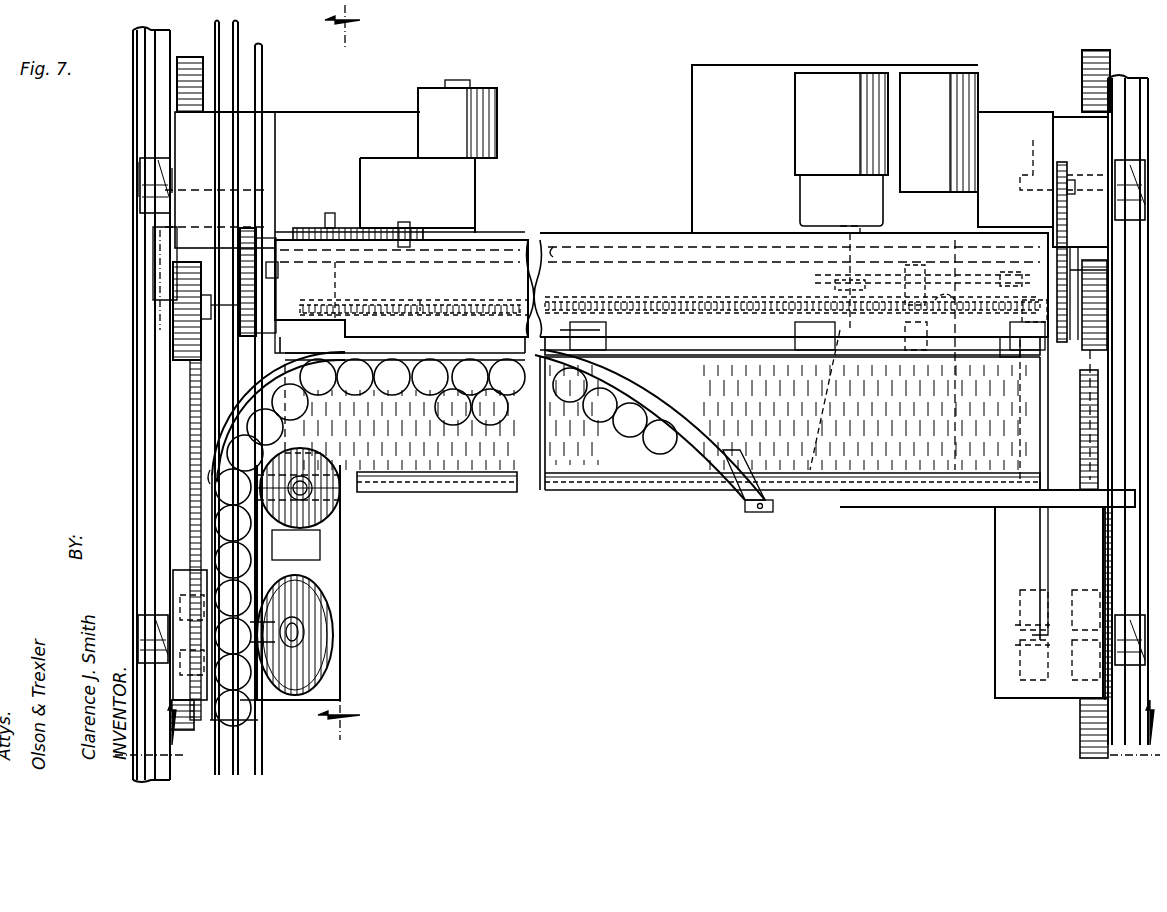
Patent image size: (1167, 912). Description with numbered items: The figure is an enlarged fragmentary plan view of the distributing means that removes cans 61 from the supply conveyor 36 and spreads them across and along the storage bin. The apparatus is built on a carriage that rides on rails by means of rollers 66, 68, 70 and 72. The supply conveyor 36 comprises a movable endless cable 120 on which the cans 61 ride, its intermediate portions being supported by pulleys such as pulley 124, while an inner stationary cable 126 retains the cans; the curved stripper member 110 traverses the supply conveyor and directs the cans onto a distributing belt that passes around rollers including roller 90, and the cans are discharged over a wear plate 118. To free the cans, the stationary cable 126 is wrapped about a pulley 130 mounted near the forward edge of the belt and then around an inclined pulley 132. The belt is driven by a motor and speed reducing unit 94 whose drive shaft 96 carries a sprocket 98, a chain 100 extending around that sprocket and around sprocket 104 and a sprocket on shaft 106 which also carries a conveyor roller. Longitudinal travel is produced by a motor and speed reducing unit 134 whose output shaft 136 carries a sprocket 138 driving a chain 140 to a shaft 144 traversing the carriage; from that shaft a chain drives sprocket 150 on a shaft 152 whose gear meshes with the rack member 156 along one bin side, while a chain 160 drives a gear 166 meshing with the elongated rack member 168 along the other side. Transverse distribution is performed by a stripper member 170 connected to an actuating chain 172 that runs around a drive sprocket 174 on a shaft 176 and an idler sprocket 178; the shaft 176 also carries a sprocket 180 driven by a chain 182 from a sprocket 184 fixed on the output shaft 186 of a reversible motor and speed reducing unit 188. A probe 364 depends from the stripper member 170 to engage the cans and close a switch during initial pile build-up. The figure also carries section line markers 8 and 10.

The elongated rack member 168 is at (180, 92).
The roller 68 is at (140, 200).
The gear 166 is at (185, 298).
The curved stripper member 110 is at (225, 430).
The roller 66 is at (150, 560).
The chain 160 is at (257, 238).
The sprocket 180 is at (350, 228).
The chain 182 is at (372, 228).
The output shaft 186 is at (408, 228).
The sprocket 184 is at (425, 228).
The reversible motor and speed reducing unit 188 is at (497, 122).
The actuating chain 172 is at (483, 300).
The rotatably supported shaft 176 is at (340, 282).
The drive sprocket 174 is at (420, 305).
The shaft 144 is at (595, 248).
The motor and speed reducing unit 94 is at (800, 105).
The drive shaft 96 is at (848, 240).
The sprocket 98 is at (830, 282).
The sprocket 104 is at (935, 300).
The motor and speed reducing unit 134 is at (1030, 112).
The output shaft 136 is at (1015, 169).
The sprocket 138 is at (1080, 182).
The drive chain 140 is at (1067, 185).
The roller 72 is at (1115, 198).
The idler sprocket 178 is at (930, 303).
The chain 100 is at (852, 340).
The shaft 106 is at (1010, 345).
The sprocket 150 is at (1060, 345).
The stripper member 170 is at (727, 447).
The roller 90 is at (310, 432).
The cans 61 is at (440, 390).
The pulley 130 is at (315, 505).
The wear plate 118 is at (588, 482).
The probe 364 is at (758, 512).
The rack member 156 is at (1080, 490).
The roller 70 is at (1118, 610).
The shaft 152 is at (1010, 640).
The pulley 132 is at (312, 660).
The section line 10 is at (360, 372).
The stationary cable 126 is at (262, 710).
The supply conveyor 36 is at (269, 749).
The movable endless cable 120 is at (240, 775).
The pulley 124 is at (213, 700).
The section line 8 is at (637, 738).